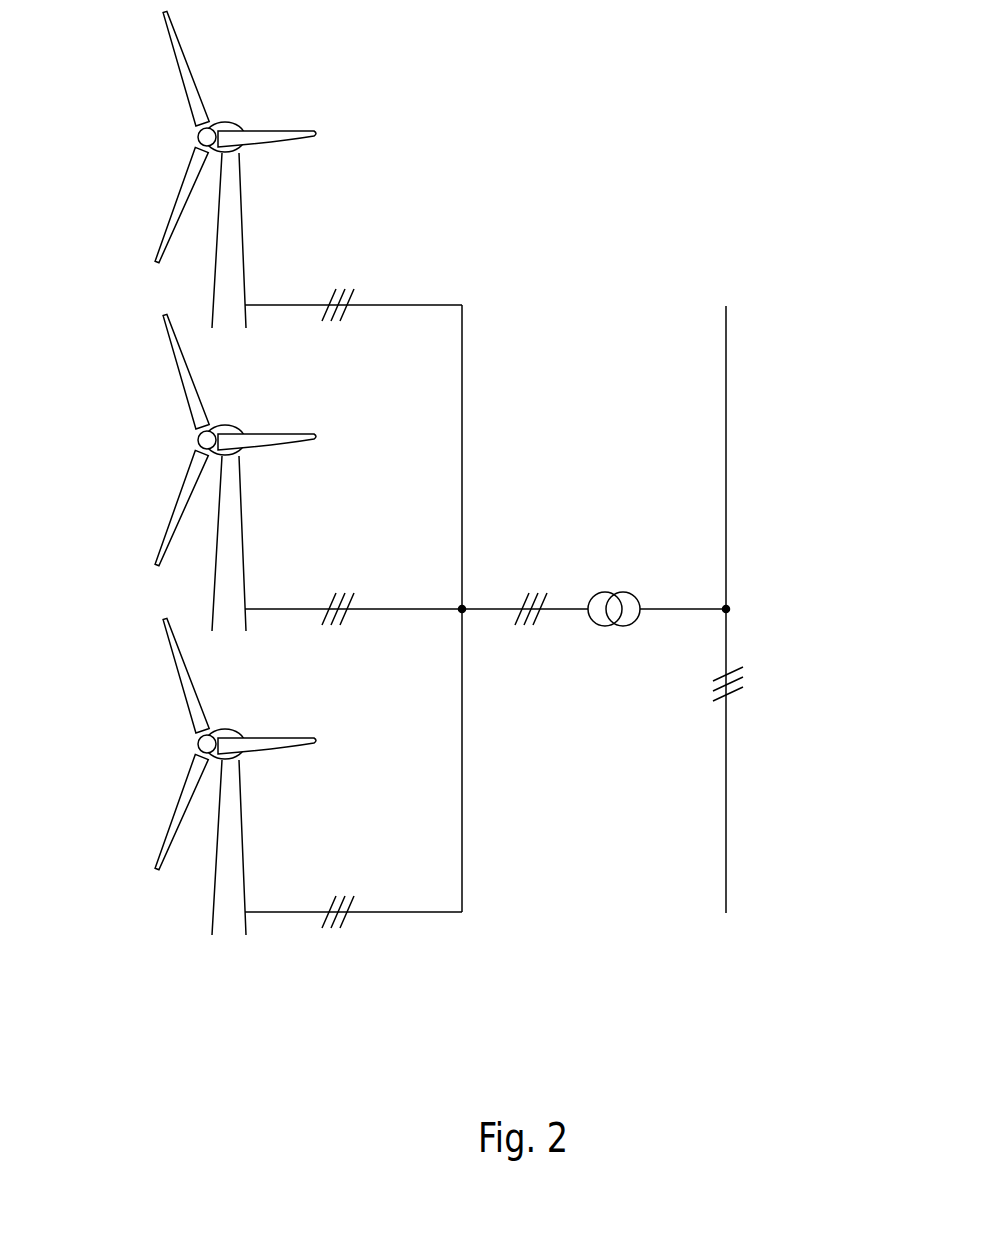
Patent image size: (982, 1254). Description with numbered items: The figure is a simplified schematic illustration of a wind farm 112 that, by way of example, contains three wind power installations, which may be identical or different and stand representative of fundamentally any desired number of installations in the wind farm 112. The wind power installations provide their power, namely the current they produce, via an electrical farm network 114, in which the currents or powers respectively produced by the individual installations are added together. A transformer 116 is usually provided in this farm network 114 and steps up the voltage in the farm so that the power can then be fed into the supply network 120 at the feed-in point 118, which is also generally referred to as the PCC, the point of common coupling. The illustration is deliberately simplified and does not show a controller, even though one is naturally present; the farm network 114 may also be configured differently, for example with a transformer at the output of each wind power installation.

The wind farm 112 is at (538, 135).
The electrical farm network 114 is at (481, 607).
The transformer 116 is at (618, 582).
The feed-in point 118 is at (742, 587).
The supply network 120 is at (727, 340).